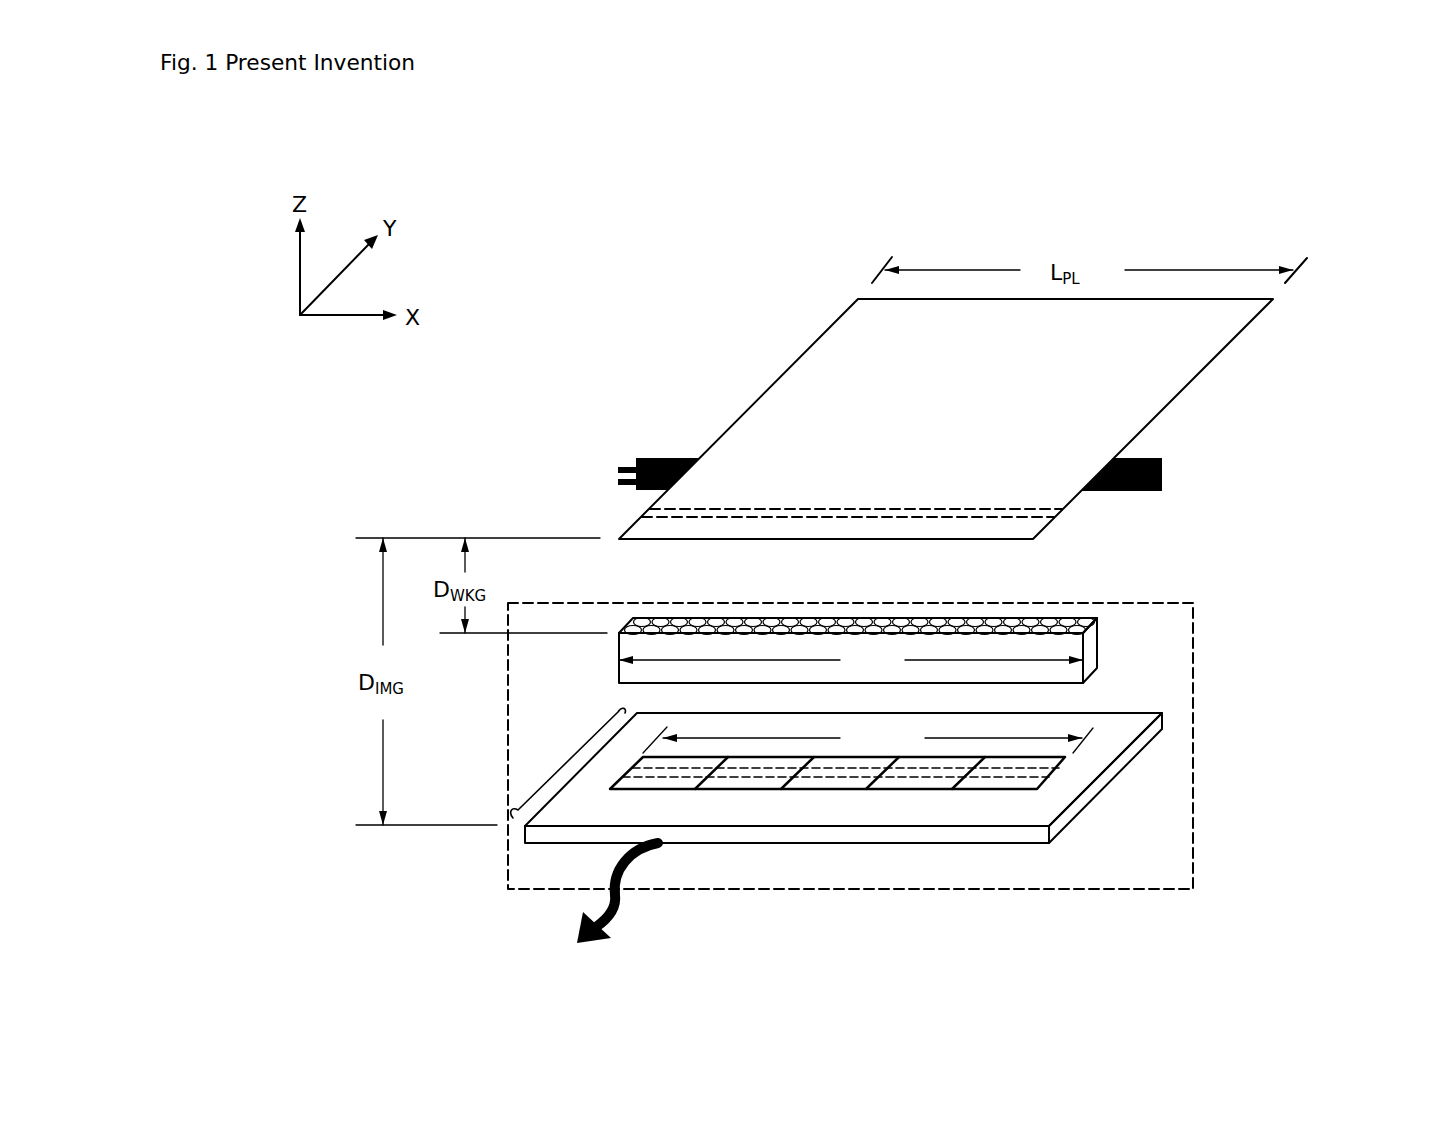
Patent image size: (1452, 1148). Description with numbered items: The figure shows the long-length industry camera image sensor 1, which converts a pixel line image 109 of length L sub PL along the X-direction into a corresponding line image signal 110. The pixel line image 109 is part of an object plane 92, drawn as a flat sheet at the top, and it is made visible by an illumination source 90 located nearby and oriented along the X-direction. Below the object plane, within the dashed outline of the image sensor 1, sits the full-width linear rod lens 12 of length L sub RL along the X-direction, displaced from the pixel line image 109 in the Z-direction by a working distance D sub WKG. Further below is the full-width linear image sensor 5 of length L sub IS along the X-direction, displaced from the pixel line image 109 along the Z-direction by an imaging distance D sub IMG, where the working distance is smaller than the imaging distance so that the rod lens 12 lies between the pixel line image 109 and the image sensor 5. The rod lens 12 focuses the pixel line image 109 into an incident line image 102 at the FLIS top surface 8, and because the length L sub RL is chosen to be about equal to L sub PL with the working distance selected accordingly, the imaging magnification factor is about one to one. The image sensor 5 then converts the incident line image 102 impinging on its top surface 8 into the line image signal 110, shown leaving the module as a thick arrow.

The long-length industry camera image sensor 1 is at (1190, 603).
The full-width linear image sensor 5 is at (566, 750).
The FLIS top surface 8 is at (843, 783).
The full-width linear rod lens 12 is at (1033, 618).
The illumination source 90 is at (655, 458).
The object plane 92 is at (862, 372).
The incident line image 102 is at (1007, 773).
The pixel line image 109 is at (1012, 507).
The line image signal 110 is at (578, 940).